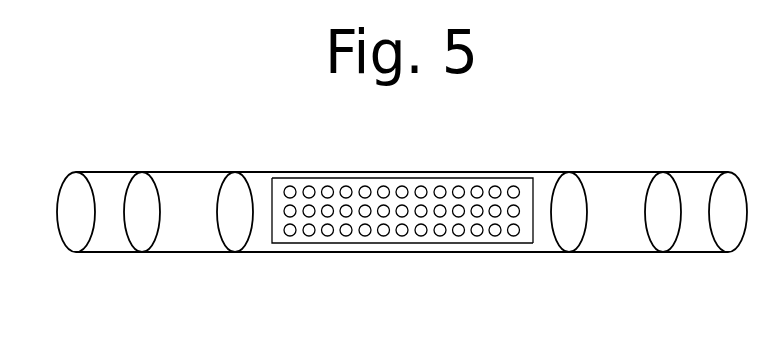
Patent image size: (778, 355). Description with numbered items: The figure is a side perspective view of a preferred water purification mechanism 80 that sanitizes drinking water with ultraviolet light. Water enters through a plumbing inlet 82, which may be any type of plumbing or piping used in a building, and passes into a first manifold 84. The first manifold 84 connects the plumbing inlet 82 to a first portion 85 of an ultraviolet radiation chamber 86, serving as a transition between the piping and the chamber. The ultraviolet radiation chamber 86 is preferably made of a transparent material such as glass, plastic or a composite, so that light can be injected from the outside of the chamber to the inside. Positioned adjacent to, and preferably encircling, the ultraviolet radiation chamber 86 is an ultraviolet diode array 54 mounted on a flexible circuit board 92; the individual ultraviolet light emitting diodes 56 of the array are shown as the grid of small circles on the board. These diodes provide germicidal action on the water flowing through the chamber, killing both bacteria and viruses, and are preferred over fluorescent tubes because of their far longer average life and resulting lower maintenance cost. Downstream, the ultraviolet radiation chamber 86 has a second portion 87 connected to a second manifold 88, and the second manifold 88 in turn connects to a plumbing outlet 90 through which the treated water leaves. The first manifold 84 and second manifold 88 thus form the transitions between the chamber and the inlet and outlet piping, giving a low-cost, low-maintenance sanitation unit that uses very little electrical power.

The water purification mechanism 80 is at (402, 184).
The ultraviolet diode array 54 is at (282, 176).
The ultraviolet light emitting diodes 56 is at (402, 187).
The flexible circuit board 92 is at (487, 181).
The plumbing inlet 82 is at (105, 252).
The first manifold 84 is at (192, 252).
The first portion of ultraviolet radiation chamber 85 is at (300, 221).
The ultraviolet radiation chamber 86 is at (412, 221).
The second portion of ultraviolet radiation chamber 87 is at (487, 226).
The second manifold 88 is at (615, 252).
The plumbing outlet 90 is at (687, 252).